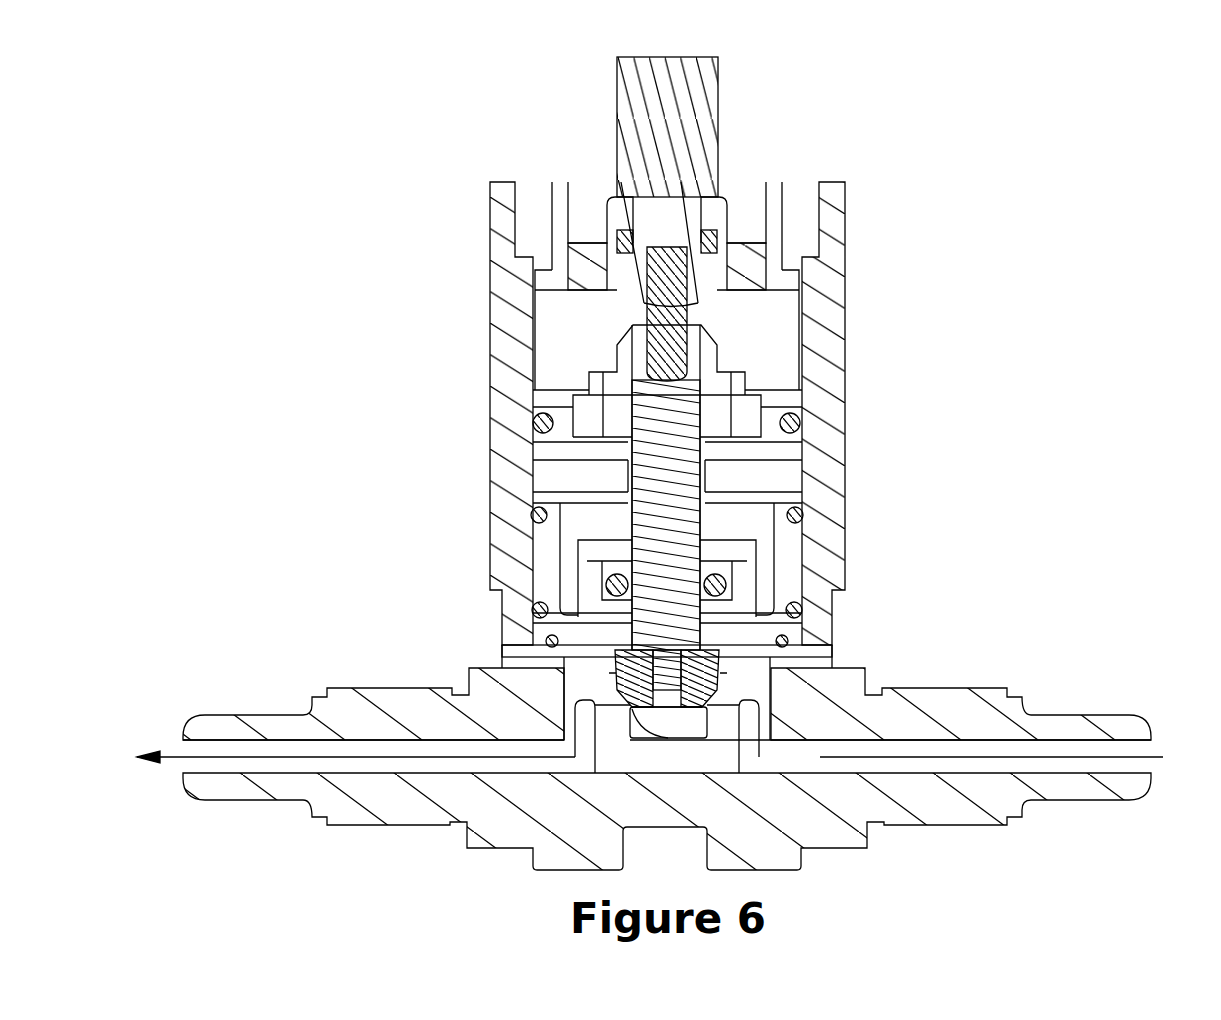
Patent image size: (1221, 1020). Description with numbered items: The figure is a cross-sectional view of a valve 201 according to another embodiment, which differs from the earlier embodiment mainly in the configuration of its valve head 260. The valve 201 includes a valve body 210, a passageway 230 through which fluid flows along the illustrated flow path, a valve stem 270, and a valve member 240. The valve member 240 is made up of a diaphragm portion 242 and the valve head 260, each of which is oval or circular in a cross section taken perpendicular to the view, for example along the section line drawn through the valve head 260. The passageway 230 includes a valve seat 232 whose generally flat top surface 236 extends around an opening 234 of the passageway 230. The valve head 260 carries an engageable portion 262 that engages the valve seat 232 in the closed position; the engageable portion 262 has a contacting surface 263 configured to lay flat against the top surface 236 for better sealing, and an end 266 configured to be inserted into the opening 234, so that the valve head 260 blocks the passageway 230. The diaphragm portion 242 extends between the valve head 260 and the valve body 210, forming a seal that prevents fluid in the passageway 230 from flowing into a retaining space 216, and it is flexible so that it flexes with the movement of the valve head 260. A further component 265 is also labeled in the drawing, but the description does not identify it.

The valve 201 is at (1073, 192).
The valve body 210 is at (846, 183).
The retaining space 216 is at (555, 300).
The valve stem 270 is at (740, 367).
The bearing 265 is at (536, 547).
The contacting surface 263 is at (712, 655).
The end 266 is at (722, 640).
The engageable portion 262 is at (745, 660).
The diaphragm portion 242 is at (834, 622).
The valve head 260 is at (540, 648).
The valve seat 232 is at (840, 700).
The valve member 240 is at (582, 688).
The top surface 236 is at (830, 701).
The opening 234 is at (645, 705).
The passageway 230 is at (402, 770).